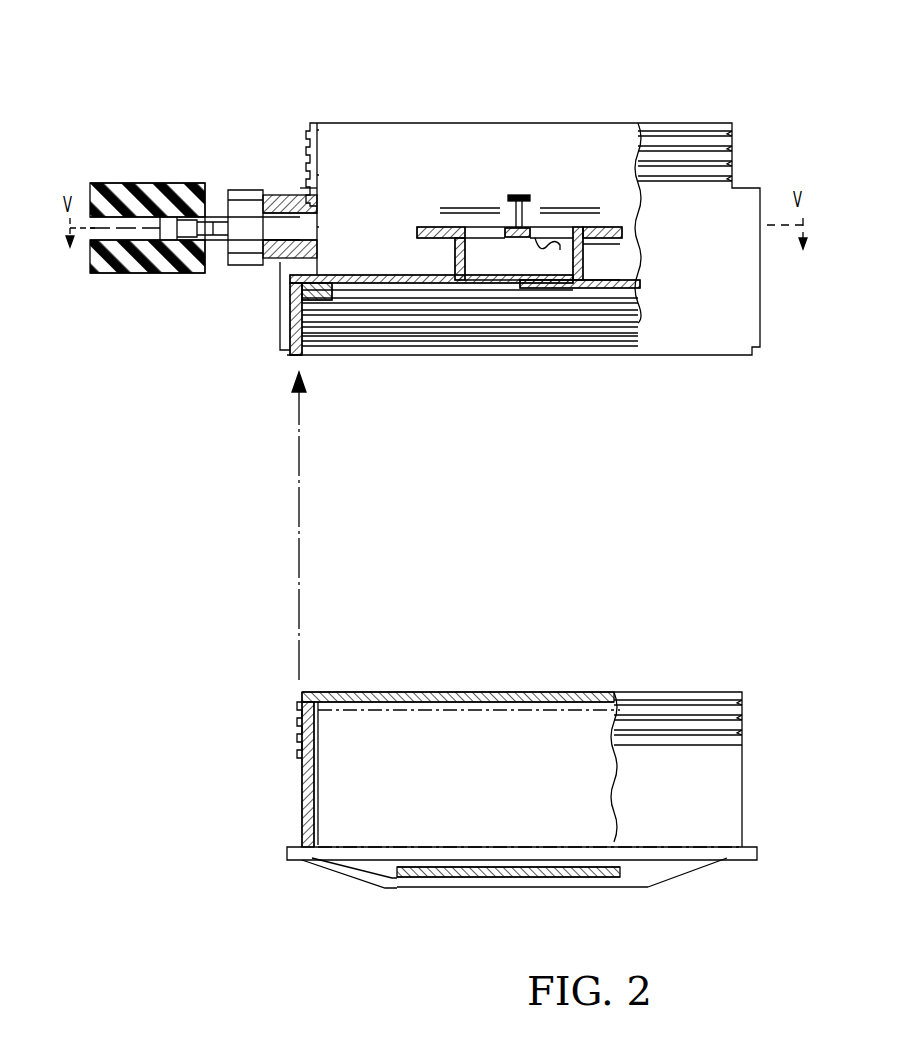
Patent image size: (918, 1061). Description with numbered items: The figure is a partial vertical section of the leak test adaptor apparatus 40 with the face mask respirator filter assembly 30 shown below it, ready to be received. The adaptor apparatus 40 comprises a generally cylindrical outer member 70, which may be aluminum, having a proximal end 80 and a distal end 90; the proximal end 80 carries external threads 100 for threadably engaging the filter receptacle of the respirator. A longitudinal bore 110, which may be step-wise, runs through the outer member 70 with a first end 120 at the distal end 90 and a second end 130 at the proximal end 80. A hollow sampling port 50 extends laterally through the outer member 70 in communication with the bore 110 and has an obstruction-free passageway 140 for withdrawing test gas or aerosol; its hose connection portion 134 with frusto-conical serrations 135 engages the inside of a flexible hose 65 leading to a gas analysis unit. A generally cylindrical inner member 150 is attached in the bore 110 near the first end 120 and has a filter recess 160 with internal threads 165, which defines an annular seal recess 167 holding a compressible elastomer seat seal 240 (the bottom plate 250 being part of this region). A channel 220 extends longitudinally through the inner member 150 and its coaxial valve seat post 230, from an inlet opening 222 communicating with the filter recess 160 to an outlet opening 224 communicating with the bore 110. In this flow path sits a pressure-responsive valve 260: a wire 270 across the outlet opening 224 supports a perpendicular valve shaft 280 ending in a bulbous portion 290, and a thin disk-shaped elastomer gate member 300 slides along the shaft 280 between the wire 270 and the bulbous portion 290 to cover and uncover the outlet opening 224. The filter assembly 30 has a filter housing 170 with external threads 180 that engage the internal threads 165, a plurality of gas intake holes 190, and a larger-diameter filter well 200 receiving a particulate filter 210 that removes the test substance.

The leak test adaptor apparatus 40 is at (513, 69).
The external threads 100 is at (732, 132).
The proximal end 80 is at (316, 125).
The longitudinal bore 110 is at (320, 150).
The outer member 70 is at (312, 187).
The second end 130 is at (320, 175).
The longitudinal obstruction-free passageway 140 is at (320, 227).
The flexible hose 65 is at (120, 183).
The hose connection portion 134 is at (212, 225).
The frusto-conical serrations 135 is at (216, 218).
The sampling port 50 is at (276, 197).
The bottom plate 250 is at (322, 283).
The first end 120 is at (292, 302).
The annular seal recess 167 is at (292, 325).
The distal end 90 is at (292, 340).
The internal threads 165 is at (345, 350).
The filter recess 160 is at (383, 290).
The inner member 150 is at (365, 300).
The seat seal 240 is at (410, 300).
The valve seat post 230 is at (465, 268).
The channel 220 is at (578, 275).
The outlet opening 224 is at (588, 252).
The inlet opening 222 is at (580, 288).
The gate member 300 is at (440, 215).
The pressure-responsive valve 260 is at (501, 196).
The bulbous portion 290 is at (518, 195).
The valve shaft 280 is at (530, 210).
The wire 270 is at (565, 240).
The particulate filter 210 is at (365, 712).
The external threads 180 is at (302, 752).
The filter well 200 is at (386, 862).
The filter housing 170 is at (350, 878).
The face mask respirator filter assembly 30 is at (412, 882).
The gas intake hole 190 is at (490, 880).